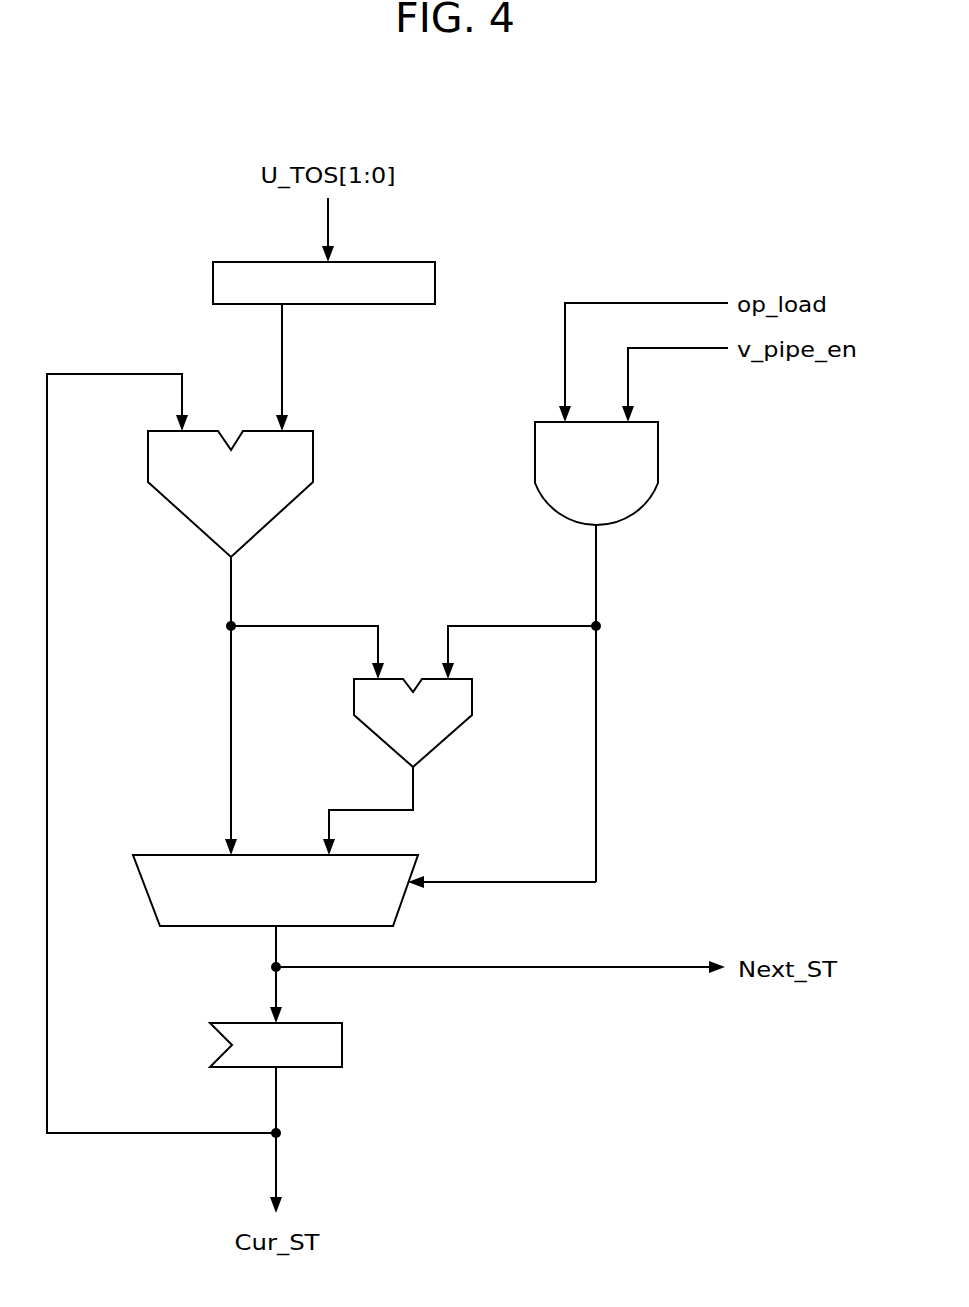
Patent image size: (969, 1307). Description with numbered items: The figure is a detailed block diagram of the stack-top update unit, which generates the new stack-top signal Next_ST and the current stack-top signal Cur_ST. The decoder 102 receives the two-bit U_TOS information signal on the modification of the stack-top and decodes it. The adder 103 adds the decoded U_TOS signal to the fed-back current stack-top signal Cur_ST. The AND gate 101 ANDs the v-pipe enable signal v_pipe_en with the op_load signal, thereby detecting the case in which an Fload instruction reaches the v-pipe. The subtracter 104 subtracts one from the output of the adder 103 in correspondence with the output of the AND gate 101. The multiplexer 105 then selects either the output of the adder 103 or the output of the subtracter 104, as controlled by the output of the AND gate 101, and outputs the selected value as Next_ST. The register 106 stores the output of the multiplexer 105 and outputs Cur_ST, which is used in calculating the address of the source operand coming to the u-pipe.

The AND gate 101 is at (660, 458).
The decoder 102 is at (412, 262).
The adder 103 is at (313, 458).
The subtracter 104 is at (474, 697).
The multiplexer 105 is at (397, 855).
The register 106 is at (344, 1045).